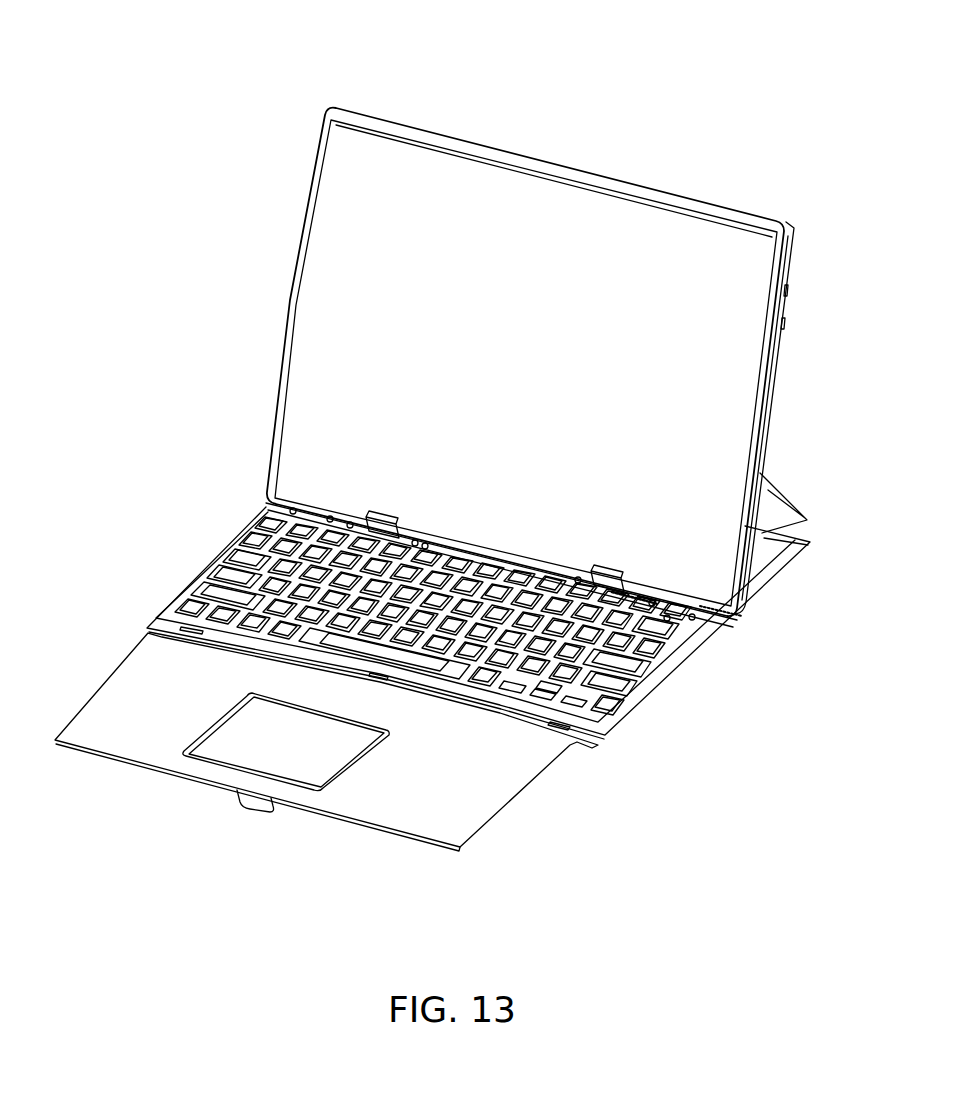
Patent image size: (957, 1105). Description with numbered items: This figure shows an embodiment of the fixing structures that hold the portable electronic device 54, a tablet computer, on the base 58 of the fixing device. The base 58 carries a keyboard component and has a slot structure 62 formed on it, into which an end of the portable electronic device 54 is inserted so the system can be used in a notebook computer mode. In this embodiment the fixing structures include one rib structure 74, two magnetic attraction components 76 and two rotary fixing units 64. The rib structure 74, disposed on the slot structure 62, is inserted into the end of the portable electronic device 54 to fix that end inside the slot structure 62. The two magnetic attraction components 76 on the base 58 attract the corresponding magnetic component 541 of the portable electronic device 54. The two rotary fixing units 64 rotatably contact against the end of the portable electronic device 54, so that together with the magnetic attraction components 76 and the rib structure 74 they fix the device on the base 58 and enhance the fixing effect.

The portable electronic device 54 is at (536, 182).
The magnetic component 541 is at (705, 598).
The base 58 is at (662, 684).
The slot structure 62 is at (727, 621).
The rotary fixing unit 64 is at (381, 514).
The rib structure 74 is at (626, 593).
The magnetic attraction component 76 is at (693, 618).